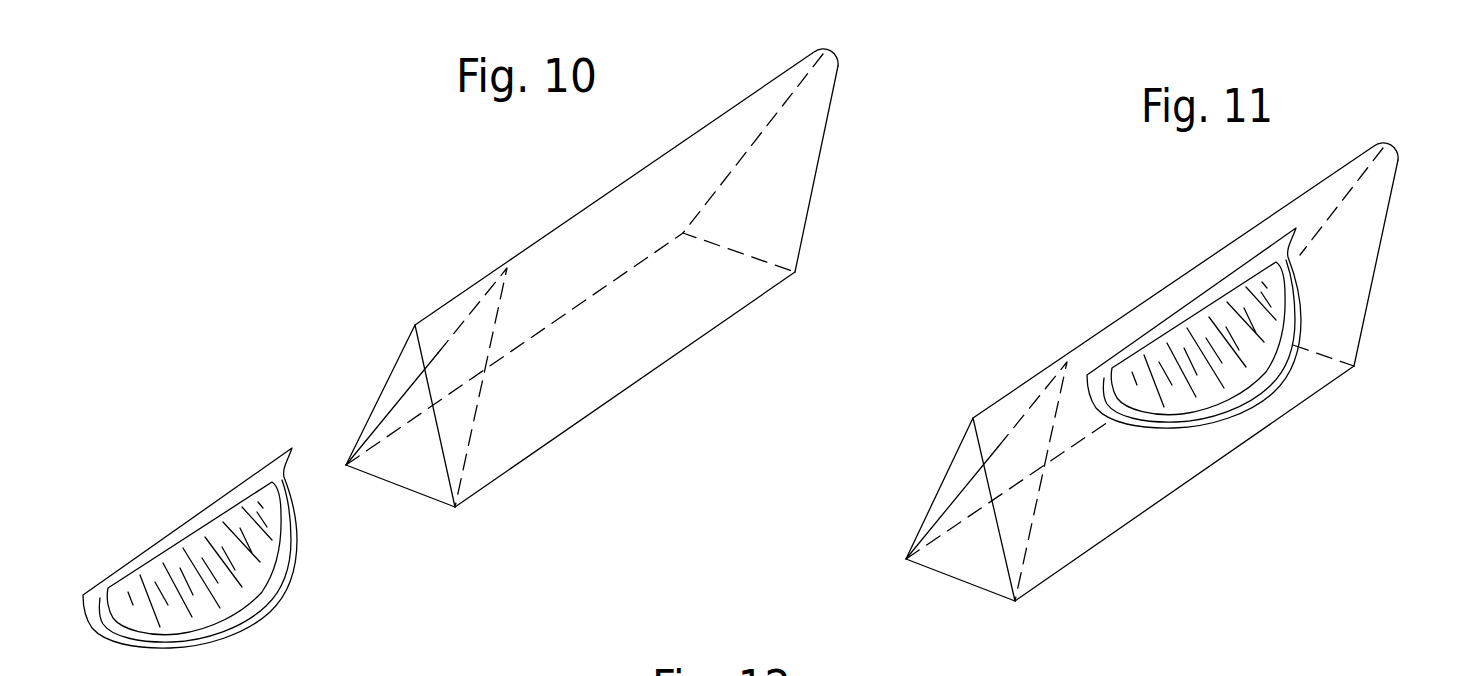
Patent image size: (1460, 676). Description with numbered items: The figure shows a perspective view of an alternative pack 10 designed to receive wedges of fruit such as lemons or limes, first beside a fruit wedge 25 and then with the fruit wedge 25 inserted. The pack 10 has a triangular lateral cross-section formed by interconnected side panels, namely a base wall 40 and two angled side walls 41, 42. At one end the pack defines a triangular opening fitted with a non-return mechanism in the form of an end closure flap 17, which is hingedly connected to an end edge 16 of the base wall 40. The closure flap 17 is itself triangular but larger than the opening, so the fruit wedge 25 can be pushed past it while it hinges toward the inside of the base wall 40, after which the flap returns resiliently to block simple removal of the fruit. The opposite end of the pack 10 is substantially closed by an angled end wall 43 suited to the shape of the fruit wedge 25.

In FIG. 10, the pack 10 is at (647, 317).
In FIG. 11, the pack 10 is at (1182, 331).
In FIG. 10, the end edge 16 is at (407, 495).
In FIG. 11, the end edge 16 is at (960, 509).
In FIG. 10, the end closure flap 17 is at (459, 334).
In FIG. 11, the end closure flap 17 is at (1024, 420).
In FIG. 10, the fruit wedge 25 is at (234, 601).
In FIG. 11, the fruit wedge 25 is at (1241, 382).
In FIG. 10, the base wall 40 is at (508, 441).
In FIG. 11, the base wall 40 is at (1076, 560).
In FIG. 10, the angled side wall 41 is at (798, 131).
In FIG. 11, the angled side wall 41 is at (1343, 273).
In FIG. 10, the angled side wall 42 is at (693, 159).
In FIG. 11, the angled side wall 42 is at (1209, 278).
In FIG. 10, the angled end wall 43 is at (810, 230).
In FIG. 11, the angled end wall 43 is at (1365, 328).